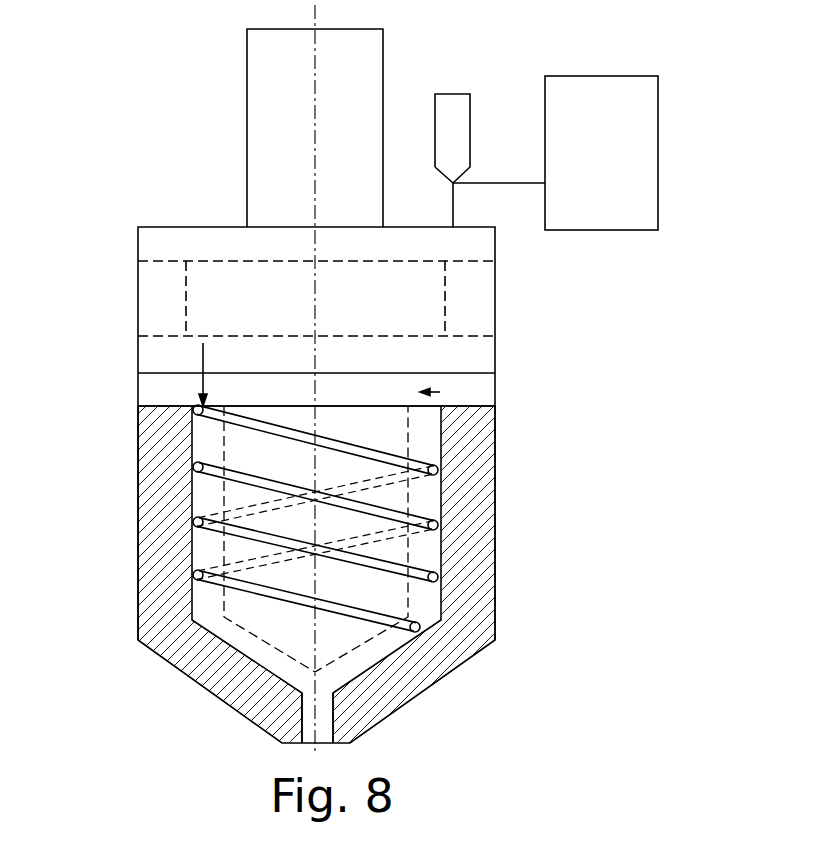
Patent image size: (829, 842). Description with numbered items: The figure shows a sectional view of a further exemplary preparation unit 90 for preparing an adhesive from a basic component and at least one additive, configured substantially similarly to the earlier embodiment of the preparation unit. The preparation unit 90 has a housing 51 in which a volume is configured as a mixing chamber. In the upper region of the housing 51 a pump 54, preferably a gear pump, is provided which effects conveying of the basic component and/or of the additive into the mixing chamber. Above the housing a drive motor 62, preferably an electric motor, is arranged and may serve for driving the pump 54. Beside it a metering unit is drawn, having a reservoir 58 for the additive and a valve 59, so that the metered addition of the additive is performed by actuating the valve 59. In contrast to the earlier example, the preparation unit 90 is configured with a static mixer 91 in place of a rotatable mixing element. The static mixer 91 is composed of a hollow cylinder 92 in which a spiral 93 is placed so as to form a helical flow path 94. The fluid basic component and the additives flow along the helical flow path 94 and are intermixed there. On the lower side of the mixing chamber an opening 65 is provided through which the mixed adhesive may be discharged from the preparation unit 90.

The preparation unit 90 is at (176, 91).
The drive motor 62 is at (384, 48).
The valve 59 is at (470, 110).
The reservoir 58 is at (640, 107).
The pump 54 is at (475, 303).
The housing 51 is at (470, 472).
The opening 65 is at (336, 716).
The helical flow path 94 is at (202, 553).
The spiral 93 is at (193, 523).
The static mixer 91 is at (443, 521).
The hollow cylinder 92 is at (437, 606).